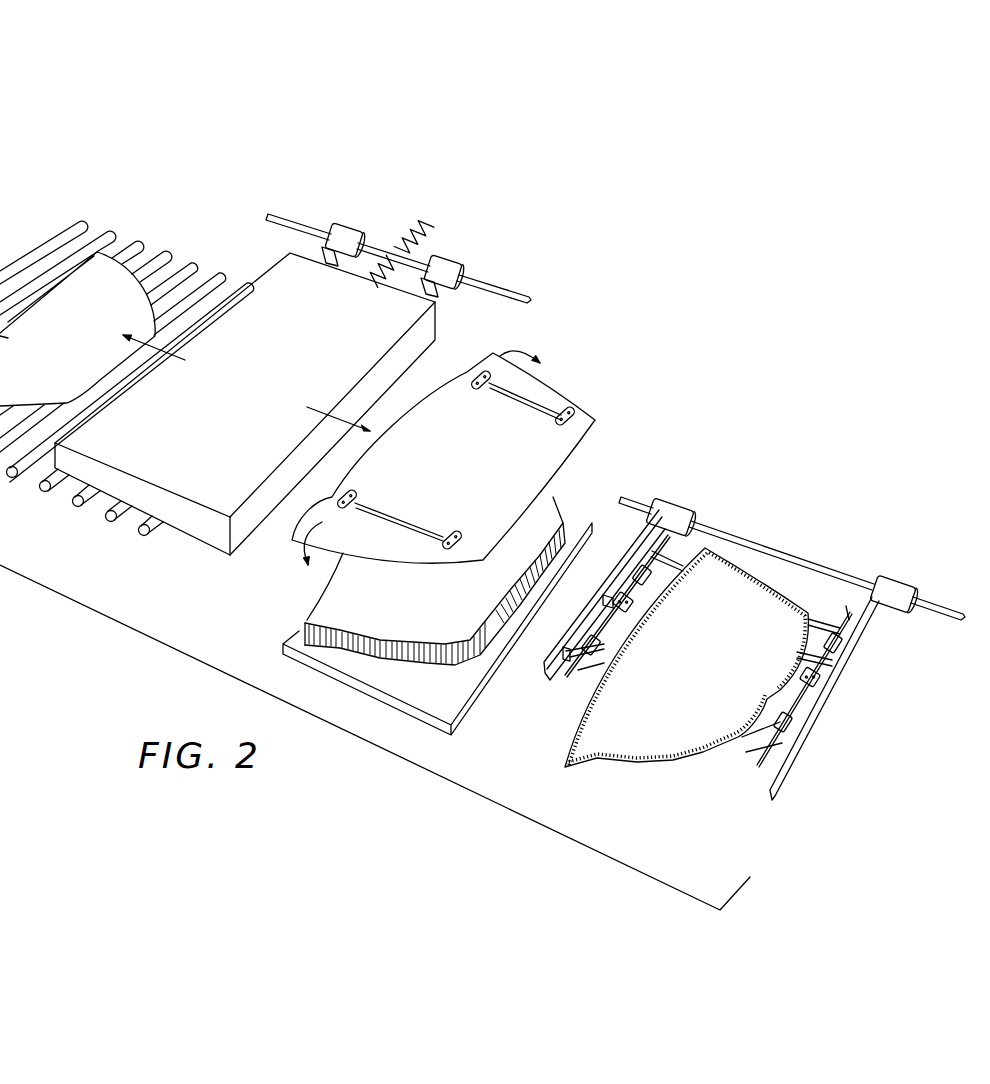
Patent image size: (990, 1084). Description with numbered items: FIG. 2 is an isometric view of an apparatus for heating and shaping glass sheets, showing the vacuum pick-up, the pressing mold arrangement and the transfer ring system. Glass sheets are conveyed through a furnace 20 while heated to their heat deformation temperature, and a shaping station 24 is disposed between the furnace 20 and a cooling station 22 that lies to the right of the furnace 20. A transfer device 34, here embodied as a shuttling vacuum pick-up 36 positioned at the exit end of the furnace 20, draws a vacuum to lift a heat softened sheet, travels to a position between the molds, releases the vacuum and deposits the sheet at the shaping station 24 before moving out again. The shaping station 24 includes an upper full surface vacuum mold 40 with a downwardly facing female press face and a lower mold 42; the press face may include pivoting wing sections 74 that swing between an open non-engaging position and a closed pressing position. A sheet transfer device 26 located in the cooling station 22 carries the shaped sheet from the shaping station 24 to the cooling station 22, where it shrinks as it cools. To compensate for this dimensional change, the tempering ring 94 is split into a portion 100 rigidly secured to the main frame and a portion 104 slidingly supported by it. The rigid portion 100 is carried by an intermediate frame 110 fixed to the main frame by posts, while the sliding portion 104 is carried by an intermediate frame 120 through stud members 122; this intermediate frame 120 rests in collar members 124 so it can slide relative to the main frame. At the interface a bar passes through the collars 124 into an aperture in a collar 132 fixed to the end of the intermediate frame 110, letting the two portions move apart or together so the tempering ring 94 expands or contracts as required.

The furnace 20 is at (185, 168).
The cooling station 22 is at (866, 455).
The shaping station 24 is at (596, 251).
The sheet transfer device 26 is at (815, 563).
The transfer device 34 is at (448, 252).
The shuttling vacuum pick-up 36 is at (278, 262).
The upper full surface vacuum mold 40 is at (583, 438).
The lower mold 42 is at (323, 591).
The pivoting wing sections 74 is at (555, 383).
The tempering ring 94 is at (676, 770).
The rigidly secured portion of the tempering ring 100 is at (589, 773).
The sliding portion of the tempering ring 104 is at (798, 597).
The intermediate frame 110 is at (567, 677).
The intermediate frame 120 is at (663, 547).
The stud members 122 is at (825, 609).
The collar members 124 is at (640, 603).
The collar 132 is at (798, 722).